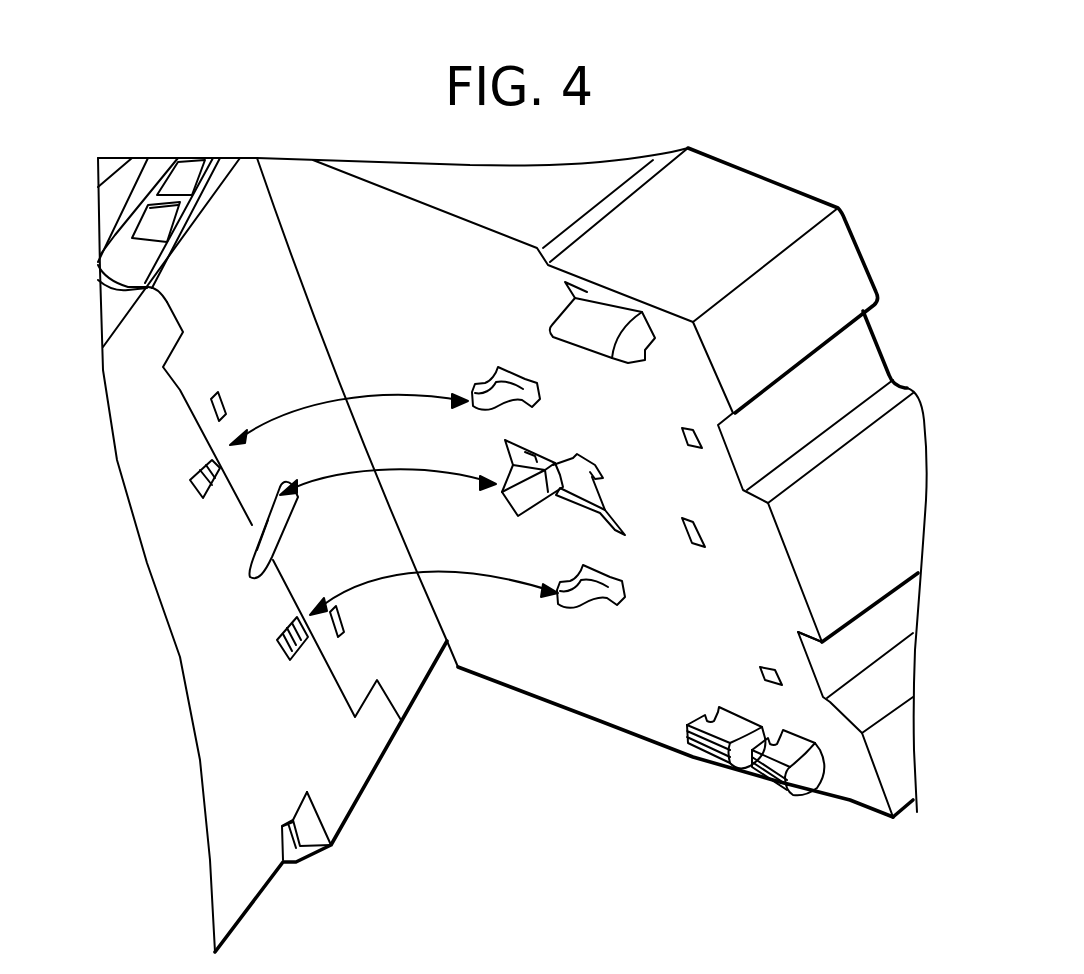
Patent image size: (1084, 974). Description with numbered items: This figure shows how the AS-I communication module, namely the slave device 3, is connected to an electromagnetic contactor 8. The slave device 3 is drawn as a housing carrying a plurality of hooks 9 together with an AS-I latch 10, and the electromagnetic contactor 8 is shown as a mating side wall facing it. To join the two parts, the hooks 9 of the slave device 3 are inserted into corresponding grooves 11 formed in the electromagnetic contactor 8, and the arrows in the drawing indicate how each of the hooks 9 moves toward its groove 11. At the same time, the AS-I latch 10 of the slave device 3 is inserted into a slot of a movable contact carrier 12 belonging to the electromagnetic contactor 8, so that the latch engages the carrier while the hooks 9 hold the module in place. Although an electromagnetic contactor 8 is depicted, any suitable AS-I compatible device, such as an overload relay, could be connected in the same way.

The slave device 3 is at (903, 413).
The electromagnetic contactor 8 is at (183, 387).
The hooks 9 is at (575, 607).
The AS-I latch 10 is at (553, 480).
The grooves 11 is at (293, 653).
The movable contact carrier 12 is at (267, 520).